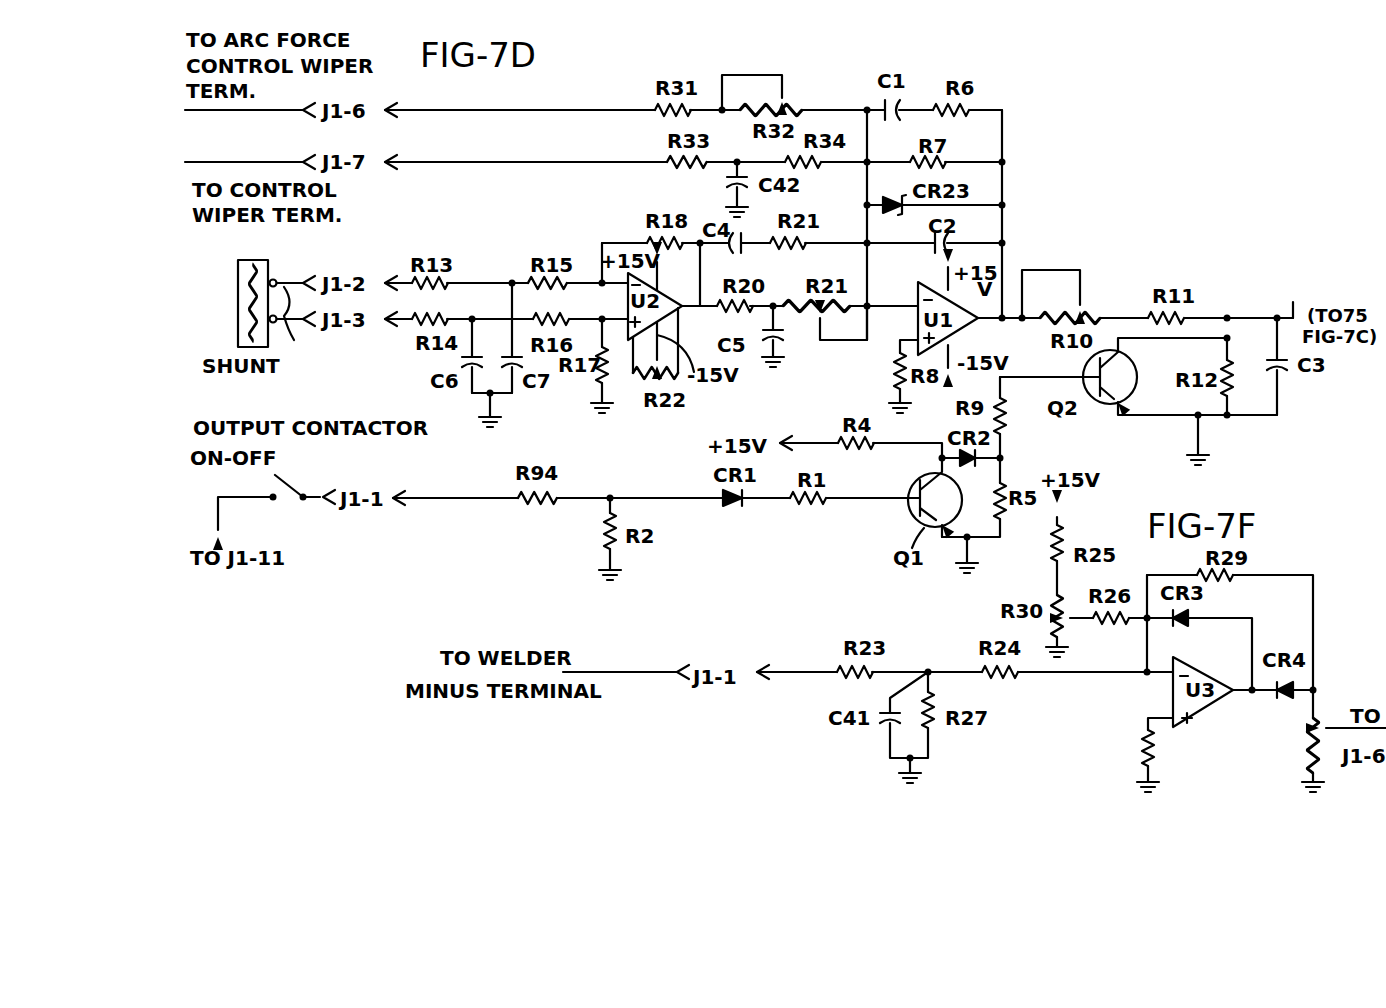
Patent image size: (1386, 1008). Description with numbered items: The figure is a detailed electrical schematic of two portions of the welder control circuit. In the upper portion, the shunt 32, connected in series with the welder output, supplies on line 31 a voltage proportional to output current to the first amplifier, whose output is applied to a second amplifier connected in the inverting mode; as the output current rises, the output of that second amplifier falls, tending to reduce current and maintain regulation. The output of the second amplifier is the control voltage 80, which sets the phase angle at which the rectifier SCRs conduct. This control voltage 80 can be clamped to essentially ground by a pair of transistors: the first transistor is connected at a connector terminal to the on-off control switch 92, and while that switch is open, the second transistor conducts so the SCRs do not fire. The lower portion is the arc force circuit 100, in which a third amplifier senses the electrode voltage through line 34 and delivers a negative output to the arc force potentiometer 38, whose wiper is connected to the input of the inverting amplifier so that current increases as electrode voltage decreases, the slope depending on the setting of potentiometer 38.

In FIG. 7D, the current feedback line 31 is at (294, 320).
In FIG. 7D, the shunt 32 is at (238, 305).
In FIG. 7F, the voltage feedback line 34 is at (645, 672).
In FIG. 7F, the arc force potentiometer 38 is at (1306, 735).
In FIG. 7D, the control voltage 80 is at (1291, 298).
In FIG. 7D, the on-off control switch 92 is at (293, 476).
In FIG. 7F, the arc force circuit 100 is at (1322, 570).